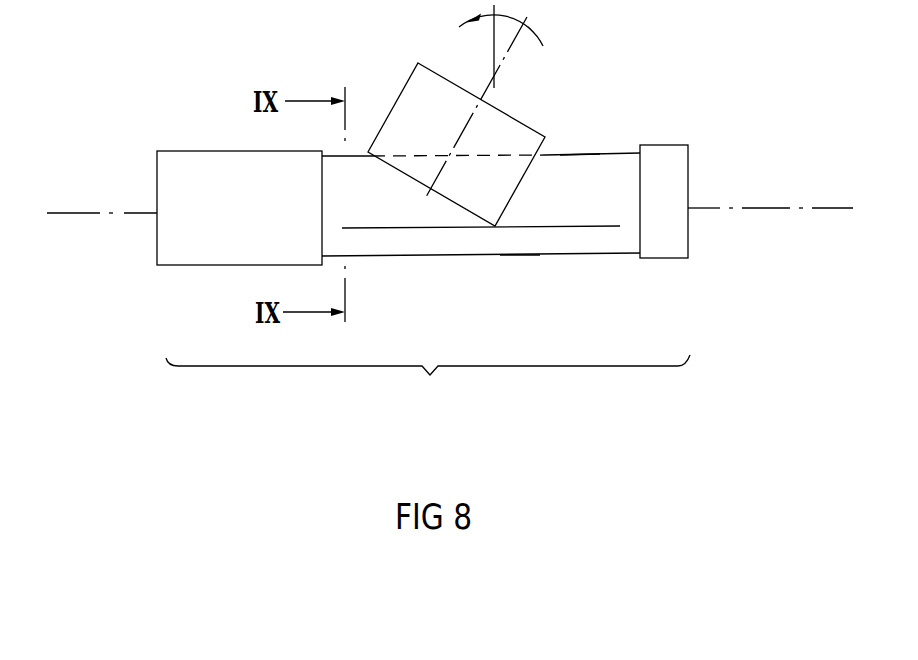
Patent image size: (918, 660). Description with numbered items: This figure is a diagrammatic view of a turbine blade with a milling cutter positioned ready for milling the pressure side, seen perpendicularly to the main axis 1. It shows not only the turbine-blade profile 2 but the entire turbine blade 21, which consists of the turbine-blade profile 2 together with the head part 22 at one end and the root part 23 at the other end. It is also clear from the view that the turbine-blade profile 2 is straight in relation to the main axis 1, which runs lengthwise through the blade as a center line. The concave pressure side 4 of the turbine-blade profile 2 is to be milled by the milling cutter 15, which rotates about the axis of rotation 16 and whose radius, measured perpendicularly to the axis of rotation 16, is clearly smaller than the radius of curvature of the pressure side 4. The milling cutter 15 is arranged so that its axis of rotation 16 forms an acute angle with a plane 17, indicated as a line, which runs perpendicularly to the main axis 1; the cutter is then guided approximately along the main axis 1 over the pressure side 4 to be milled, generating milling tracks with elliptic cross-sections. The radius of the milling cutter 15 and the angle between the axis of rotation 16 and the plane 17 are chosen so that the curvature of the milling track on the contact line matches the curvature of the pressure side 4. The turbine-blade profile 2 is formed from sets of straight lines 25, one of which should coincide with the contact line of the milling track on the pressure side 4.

The main axis 1 is at (772, 208).
The turbine-blade profile 2 is at (570, 256).
The pressure side 4 is at (615, 154).
The milling cutter 15 is at (403, 88).
The axis of rotation 16 is at (510, 48).
The plane 17 is at (494, 52).
The turbine blade 21 is at (428, 382).
The head part 22 is at (656, 258).
The root part 23 is at (200, 265).
The straight lines 25 is at (583, 155).